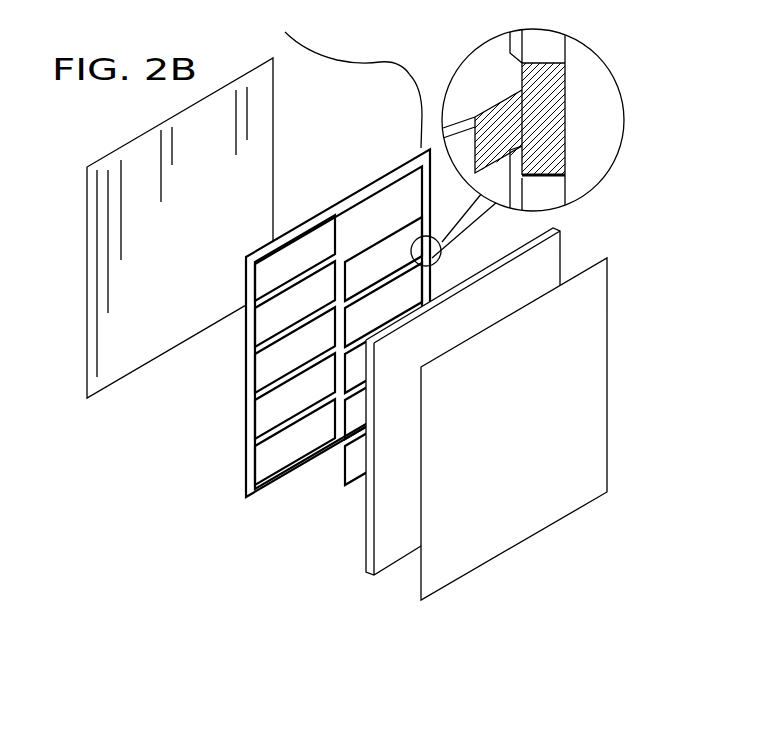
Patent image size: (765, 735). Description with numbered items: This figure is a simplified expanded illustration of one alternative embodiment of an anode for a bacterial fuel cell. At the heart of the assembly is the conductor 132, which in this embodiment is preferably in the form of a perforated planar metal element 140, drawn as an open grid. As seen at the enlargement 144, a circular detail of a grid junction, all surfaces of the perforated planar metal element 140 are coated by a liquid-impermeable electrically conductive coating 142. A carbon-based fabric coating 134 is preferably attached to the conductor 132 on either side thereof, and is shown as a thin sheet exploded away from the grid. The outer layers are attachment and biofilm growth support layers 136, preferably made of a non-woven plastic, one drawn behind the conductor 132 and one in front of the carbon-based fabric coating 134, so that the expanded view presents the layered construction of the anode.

The conductor 132 is at (248, 427).
The carbon-based fabric coating 134 is at (368, 533).
The attachment and biofilm growth support layer 136 is at (100, 247).
The perforated planar metal element 140 is at (560, 117).
The liquid-impermeable electrically conductive coating 142 is at (552, 186).
The enlargement 144 is at (585, 42).